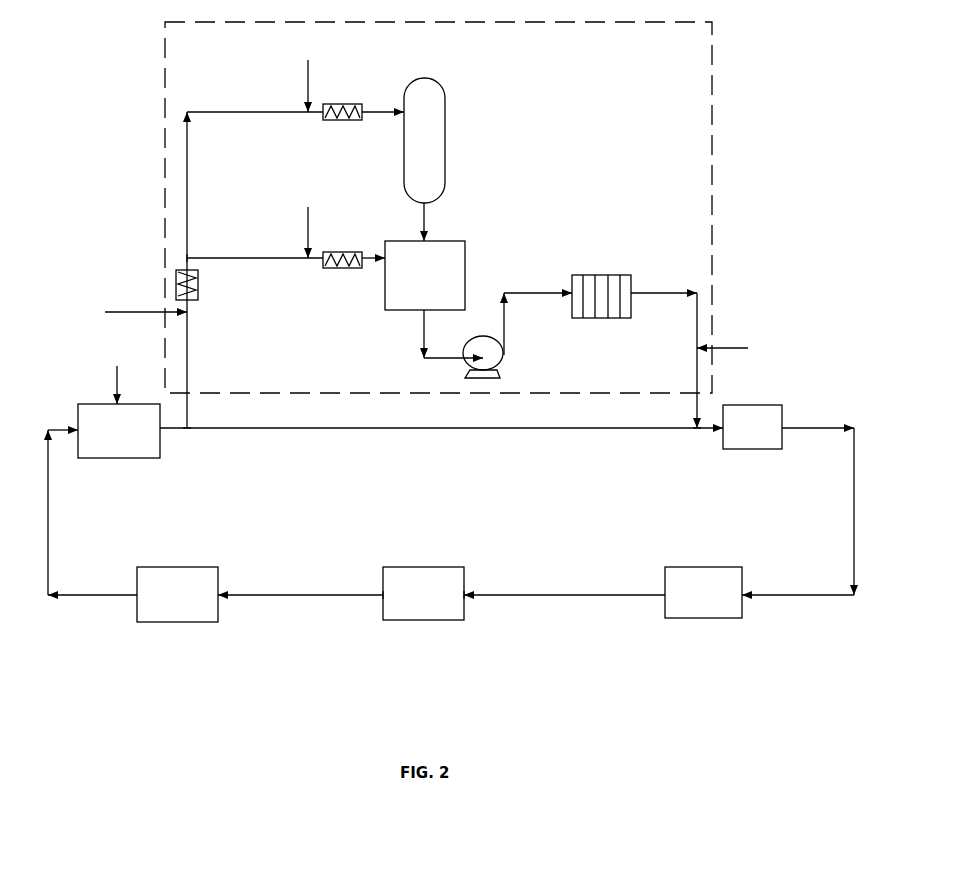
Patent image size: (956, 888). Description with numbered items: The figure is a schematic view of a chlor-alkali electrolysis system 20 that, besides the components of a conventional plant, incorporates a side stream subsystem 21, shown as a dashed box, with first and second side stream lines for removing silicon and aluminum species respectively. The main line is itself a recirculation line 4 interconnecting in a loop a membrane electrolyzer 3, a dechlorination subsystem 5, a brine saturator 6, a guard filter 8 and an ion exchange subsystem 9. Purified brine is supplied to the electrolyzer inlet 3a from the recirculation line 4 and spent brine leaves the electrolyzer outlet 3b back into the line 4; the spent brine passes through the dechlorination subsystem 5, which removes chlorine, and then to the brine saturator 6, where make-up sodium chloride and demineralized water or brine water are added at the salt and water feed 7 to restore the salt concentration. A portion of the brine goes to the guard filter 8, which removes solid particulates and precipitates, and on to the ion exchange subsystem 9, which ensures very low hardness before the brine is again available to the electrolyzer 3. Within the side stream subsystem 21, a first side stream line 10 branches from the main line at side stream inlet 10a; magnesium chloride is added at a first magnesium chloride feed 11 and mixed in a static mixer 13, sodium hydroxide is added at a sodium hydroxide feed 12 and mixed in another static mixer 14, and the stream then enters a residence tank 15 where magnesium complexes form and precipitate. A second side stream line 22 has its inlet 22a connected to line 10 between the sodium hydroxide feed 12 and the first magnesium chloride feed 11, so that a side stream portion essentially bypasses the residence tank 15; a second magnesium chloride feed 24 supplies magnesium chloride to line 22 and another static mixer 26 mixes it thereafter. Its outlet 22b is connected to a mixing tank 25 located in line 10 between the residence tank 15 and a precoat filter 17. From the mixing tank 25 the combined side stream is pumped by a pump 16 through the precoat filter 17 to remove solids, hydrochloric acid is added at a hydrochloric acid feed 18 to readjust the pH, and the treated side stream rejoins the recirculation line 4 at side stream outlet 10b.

The membrane electrolyzer 3 is at (425, 578).
The inlet 3a is at (468, 600).
The outlet 3b is at (380, 590).
The main line/recirculation line 4 is at (52, 478).
The dechlorination subsystem 5 is at (178, 578).
The brine saturator 6 is at (135, 445).
The salt and water feed 7 is at (110, 385).
The guard filter 8 is at (752, 425).
The ion exchange subsystem 9 is at (700, 582).
The first side stream line 10 is at (228, 110).
The side stream inlet 10a is at (192, 426).
The side stream outlet 10b is at (690, 425).
The first magnesium chloride feed 11 is at (315, 86).
The sodium hydroxide feed 12 is at (152, 307).
The static mixer 13 is at (345, 121).
The static mixer 14 is at (195, 285).
The residence tank 15 is at (426, 138).
The pump 16 is at (488, 347).
The precoat filter 17 is at (603, 290).
The hydrochloric acid feed 18 is at (722, 347).
The electrolysis system 20 is at (132, 192).
The side stream subsystem 21 is at (727, 141).
The second side stream line 22 is at (243, 260).
The inlet 22a is at (190, 257).
The outlet 22b is at (418, 330).
The second magnesium chloride feed 24 is at (312, 232).
The mixing tank 25 is at (435, 252).
The static mixer 26 is at (332, 268).